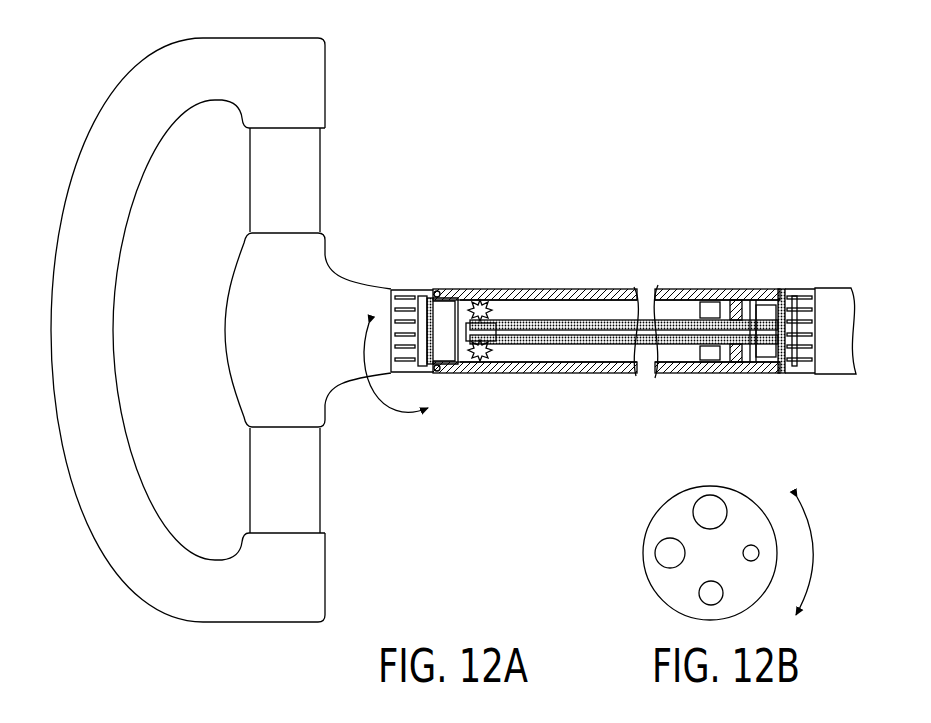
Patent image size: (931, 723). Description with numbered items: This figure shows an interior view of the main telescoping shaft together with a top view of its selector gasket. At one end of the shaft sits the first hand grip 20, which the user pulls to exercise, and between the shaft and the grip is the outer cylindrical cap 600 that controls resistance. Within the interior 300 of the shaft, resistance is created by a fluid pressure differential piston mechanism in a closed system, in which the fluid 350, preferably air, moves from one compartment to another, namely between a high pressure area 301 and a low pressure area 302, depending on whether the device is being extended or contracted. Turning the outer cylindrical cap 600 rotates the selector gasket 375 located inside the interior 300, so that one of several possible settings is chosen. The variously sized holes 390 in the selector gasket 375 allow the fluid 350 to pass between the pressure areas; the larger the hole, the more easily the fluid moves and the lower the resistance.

In FIG. 12A, the first hand grip 20 is at (163, 67).
In FIG. 12A, the outer cylindrical cap 600 is at (400, 289).
In FIG. 12A, the interior 300 is at (548, 290).
In FIG. 12A, the high pressure area 301 is at (597, 308).
In FIG. 12A, the low pressure area 302 is at (468, 307).
In FIG. 12A, the fluid 350 is at (545, 352).
In FIG. 12A, the selector gasket 375 is at (478, 357).
In FIG. 12B, the selector gasket 375 is at (747, 520).
In FIG. 12B, the holes 390 is at (700, 497).